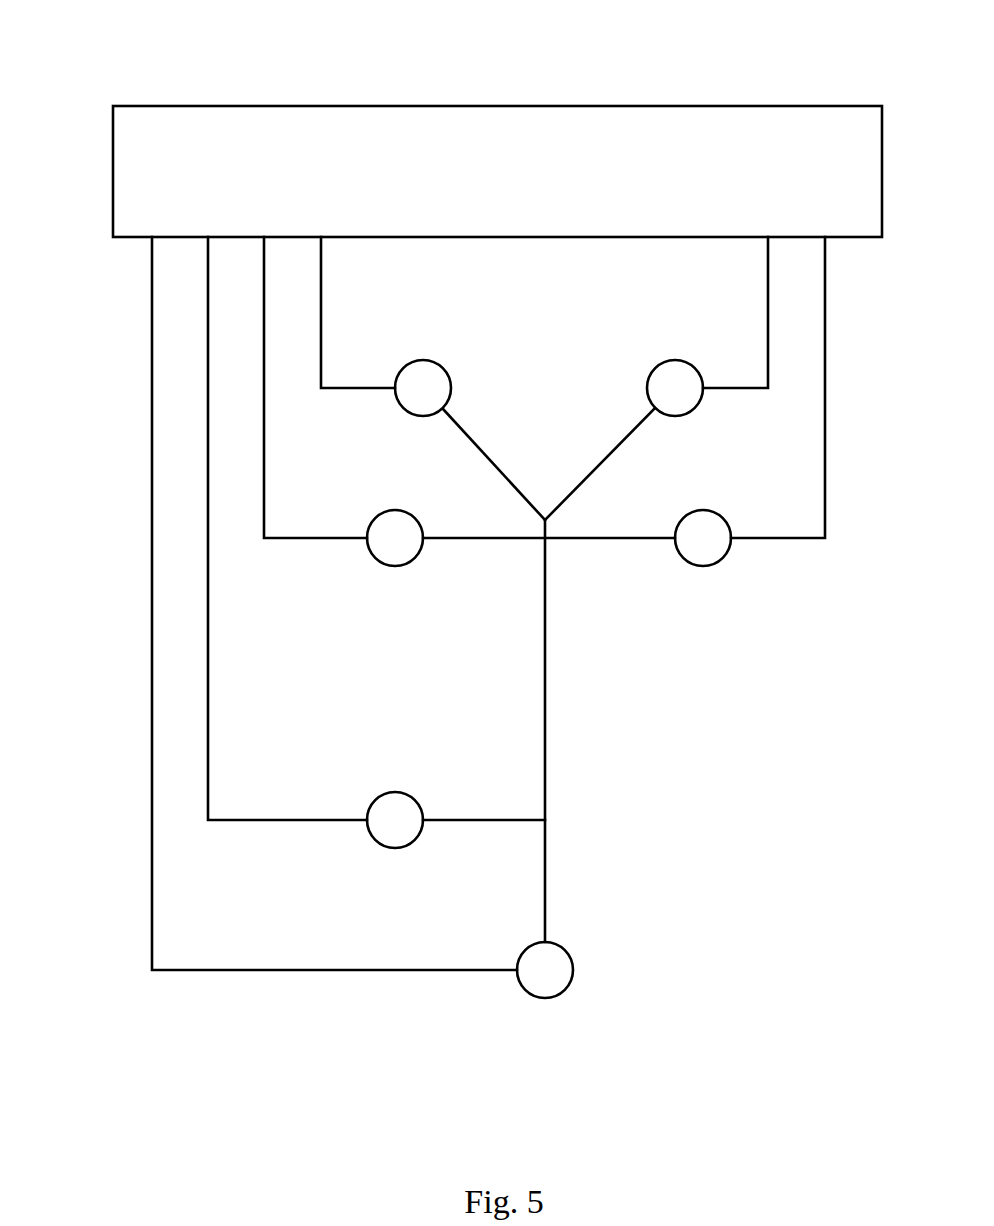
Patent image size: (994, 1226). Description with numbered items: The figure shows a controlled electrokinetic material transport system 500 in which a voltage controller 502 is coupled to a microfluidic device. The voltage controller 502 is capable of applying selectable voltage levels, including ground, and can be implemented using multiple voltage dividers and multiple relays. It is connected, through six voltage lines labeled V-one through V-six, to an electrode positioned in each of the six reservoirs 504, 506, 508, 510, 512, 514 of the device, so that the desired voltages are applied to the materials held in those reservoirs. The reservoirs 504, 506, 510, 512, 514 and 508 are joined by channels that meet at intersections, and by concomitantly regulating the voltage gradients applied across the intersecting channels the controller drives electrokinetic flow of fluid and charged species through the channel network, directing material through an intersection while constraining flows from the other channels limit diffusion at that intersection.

The system 500 is at (740, 84).
The voltage controller 502 is at (113, 172).
The reservoir 504 is at (418, 360).
The reservoir 506 is at (695, 362).
The reservoir 508 is at (572, 973).
The reservoir 510 is at (375, 517).
The reservoir 512 is at (703, 510).
The reservoir 514 is at (374, 841).